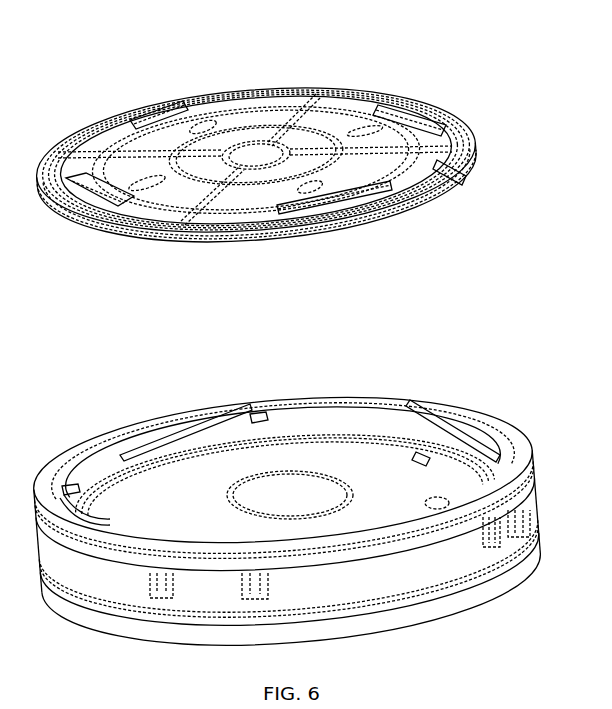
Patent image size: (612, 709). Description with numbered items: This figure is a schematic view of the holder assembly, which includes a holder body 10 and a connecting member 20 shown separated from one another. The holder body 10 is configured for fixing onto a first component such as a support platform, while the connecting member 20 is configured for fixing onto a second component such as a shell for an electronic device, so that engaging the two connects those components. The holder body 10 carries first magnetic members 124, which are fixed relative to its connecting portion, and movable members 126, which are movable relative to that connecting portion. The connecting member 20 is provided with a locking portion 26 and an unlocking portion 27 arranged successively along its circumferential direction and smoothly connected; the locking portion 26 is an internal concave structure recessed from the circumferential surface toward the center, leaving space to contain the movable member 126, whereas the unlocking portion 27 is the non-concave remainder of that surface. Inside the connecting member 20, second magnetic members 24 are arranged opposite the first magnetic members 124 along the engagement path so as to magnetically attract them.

The holder body 10 is at (545, 431).
The connecting member 20 is at (300, 70).
The second magnetic member 24 is at (174, 110).
The locking portion 26 is at (141, 216).
The unlocking portion 27 is at (188, 237).
The first magnetic member 124 is at (72, 488).
The movable member 126 is at (200, 432).